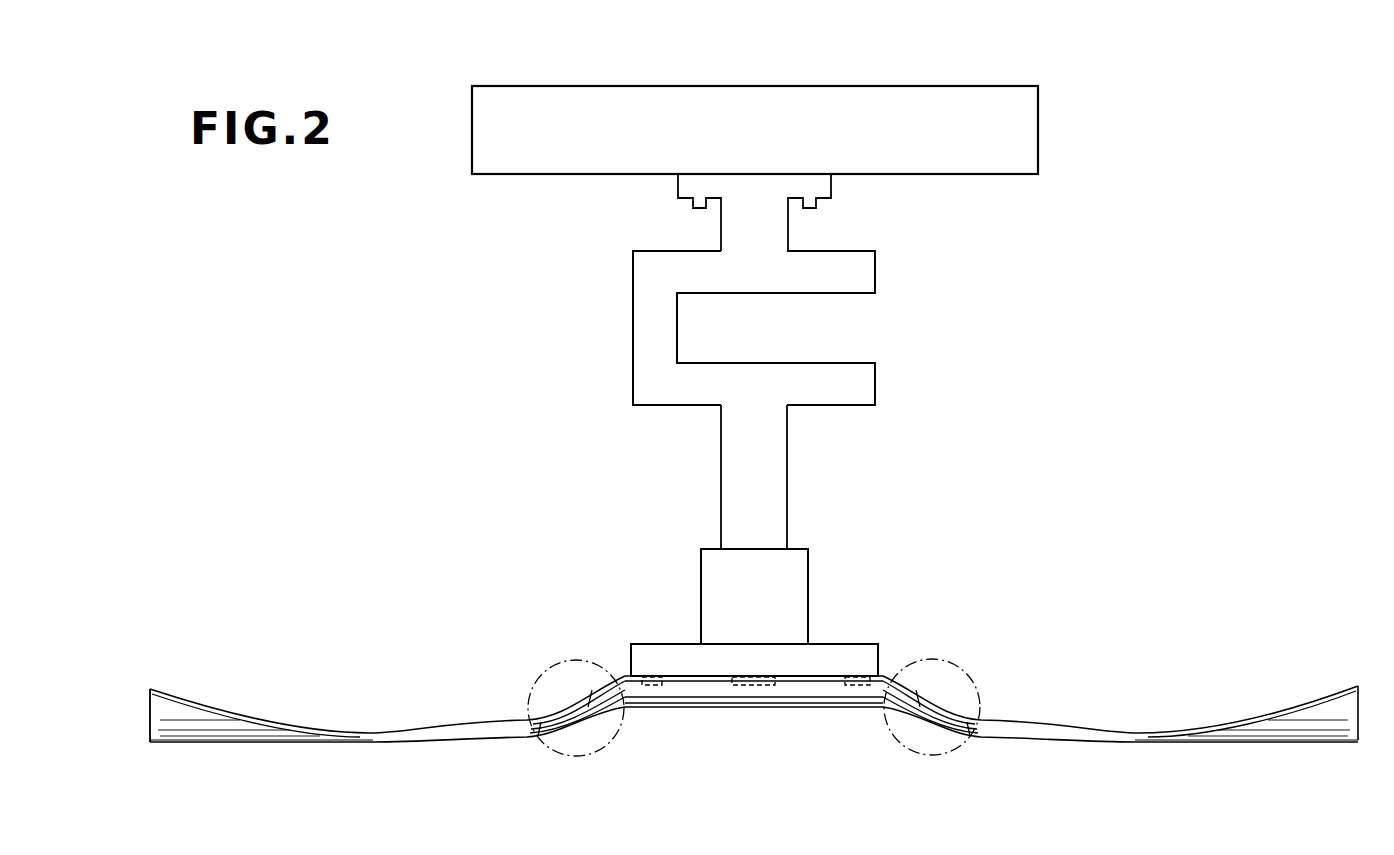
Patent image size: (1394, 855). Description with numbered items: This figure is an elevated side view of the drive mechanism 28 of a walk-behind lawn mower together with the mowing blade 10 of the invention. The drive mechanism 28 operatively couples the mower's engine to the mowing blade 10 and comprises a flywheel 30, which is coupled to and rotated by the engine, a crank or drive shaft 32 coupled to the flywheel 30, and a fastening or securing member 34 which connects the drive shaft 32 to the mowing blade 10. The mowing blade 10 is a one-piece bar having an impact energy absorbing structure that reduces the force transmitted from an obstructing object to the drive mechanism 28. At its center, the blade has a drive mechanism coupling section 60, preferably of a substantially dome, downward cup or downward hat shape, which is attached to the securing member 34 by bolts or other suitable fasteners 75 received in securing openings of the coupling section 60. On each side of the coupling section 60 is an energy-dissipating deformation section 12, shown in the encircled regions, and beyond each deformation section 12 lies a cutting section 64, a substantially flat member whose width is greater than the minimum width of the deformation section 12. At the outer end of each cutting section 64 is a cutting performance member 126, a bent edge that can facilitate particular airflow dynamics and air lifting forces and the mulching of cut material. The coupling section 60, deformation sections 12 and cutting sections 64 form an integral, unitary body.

The mowing blade 10 is at (190, 622).
The energy-dissipating deformation section 12 is at (538, 668).
The drive mechanism 28 is at (1160, 320).
The flywheel 30 is at (924, 78).
The drive shaft 32 is at (629, 331).
The securing member 34 is at (814, 582).
The drive mechanism coupling section 60 is at (752, 712).
The cutting section 64 is at (207, 746).
The fasteners 75 is at (652, 677).
The cutting performance member 126 is at (165, 692).